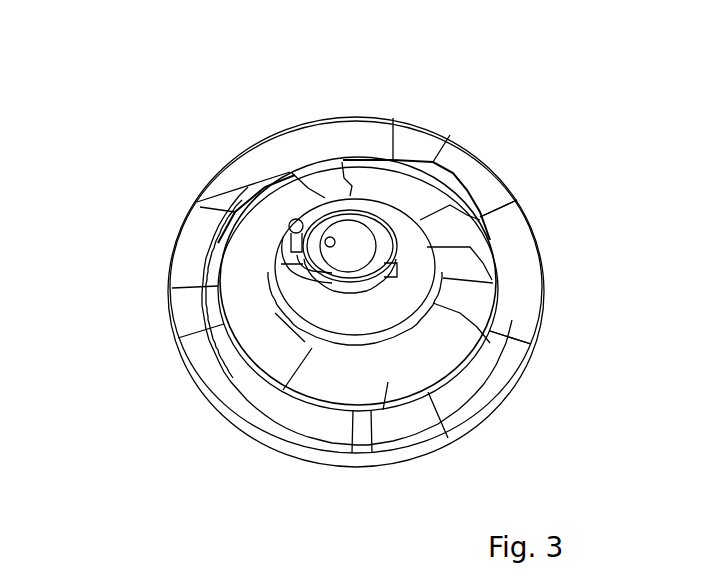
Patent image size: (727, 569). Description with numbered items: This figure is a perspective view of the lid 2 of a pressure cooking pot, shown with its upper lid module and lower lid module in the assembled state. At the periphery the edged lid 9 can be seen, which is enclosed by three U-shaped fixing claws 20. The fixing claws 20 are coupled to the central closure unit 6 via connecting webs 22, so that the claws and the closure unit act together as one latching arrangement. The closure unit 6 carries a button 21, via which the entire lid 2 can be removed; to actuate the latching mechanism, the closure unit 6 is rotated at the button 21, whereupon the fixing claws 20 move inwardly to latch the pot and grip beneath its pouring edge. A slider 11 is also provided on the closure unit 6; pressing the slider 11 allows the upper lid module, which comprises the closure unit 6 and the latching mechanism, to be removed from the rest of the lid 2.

The lid 2 is at (186, 452).
The closure unit 6 is at (519, 200).
The edged lid 9 is at (372, 427).
The slider 11 is at (396, 262).
The fixing claws 20 is at (244, 186).
The button 21 is at (353, 233).
The connecting webs 22 is at (172, 347).